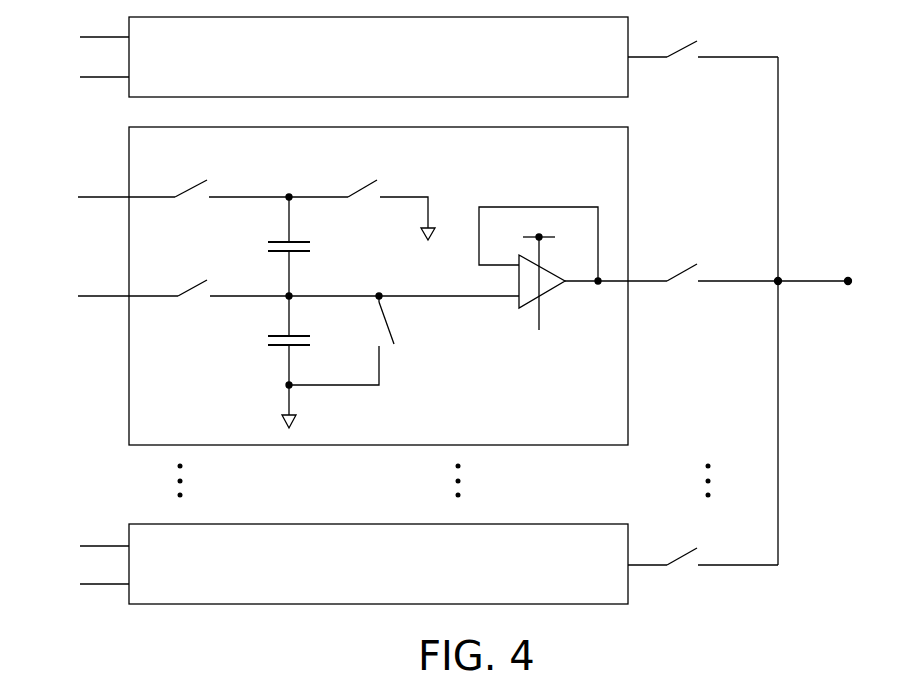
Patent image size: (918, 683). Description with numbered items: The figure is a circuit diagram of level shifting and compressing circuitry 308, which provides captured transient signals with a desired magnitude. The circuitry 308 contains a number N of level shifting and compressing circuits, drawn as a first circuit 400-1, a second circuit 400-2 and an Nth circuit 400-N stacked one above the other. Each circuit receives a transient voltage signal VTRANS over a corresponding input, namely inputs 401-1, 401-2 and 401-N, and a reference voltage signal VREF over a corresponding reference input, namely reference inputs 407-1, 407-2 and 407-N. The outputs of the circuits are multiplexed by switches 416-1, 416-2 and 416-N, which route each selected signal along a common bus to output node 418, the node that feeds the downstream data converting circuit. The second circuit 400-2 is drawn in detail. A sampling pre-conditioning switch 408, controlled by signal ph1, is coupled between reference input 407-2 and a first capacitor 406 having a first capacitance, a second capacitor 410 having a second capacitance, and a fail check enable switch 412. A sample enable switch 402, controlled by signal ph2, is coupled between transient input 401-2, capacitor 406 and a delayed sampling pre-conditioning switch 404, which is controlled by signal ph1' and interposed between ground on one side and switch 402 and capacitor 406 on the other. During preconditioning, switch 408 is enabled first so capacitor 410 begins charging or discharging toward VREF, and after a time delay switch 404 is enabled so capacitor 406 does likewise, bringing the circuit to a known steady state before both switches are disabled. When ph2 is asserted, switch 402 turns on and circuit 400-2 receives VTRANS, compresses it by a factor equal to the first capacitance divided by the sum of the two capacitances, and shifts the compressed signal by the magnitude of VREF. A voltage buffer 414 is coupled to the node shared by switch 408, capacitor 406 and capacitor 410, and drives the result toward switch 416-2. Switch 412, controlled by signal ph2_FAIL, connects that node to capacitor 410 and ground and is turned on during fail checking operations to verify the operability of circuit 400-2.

The first level shifting and compressing circuit 400-1 is at (397, 65).
The second level shifting and compressing circuit 400-2 is at (567, 165).
The Nth level shifting and compressing circuit 400-N is at (398, 575).
The first transient voltage input 401-1 is at (101, 36).
The second transient voltage input 401-2 is at (101, 198).
The Nth transient voltage input 401-N is at (101, 545).
The first reference input 407-1 is at (101, 78).
The second reference input 407-2 is at (101, 297).
The Nth reference input 407-N is at (101, 585).
The sample enable switch 402 is at (195, 184).
The delayed sampling pre-conditioning switch 404 is at (365, 185).
The first capacitor 406 is at (300, 252).
The sampling pre-conditioning switch 408 is at (196, 284).
The second capacitor 410 is at (300, 347).
The fail check enable switch 412 is at (392, 333).
The voltage buffer 414 is at (545, 290).
The first switch 416-1 is at (683, 43).
The second switch 416-2 is at (683, 267).
The Nth switch 416-N is at (683, 551).
The output node 418 is at (847, 277).
The level shifting and compressing circuitry 308 is at (690, 622).